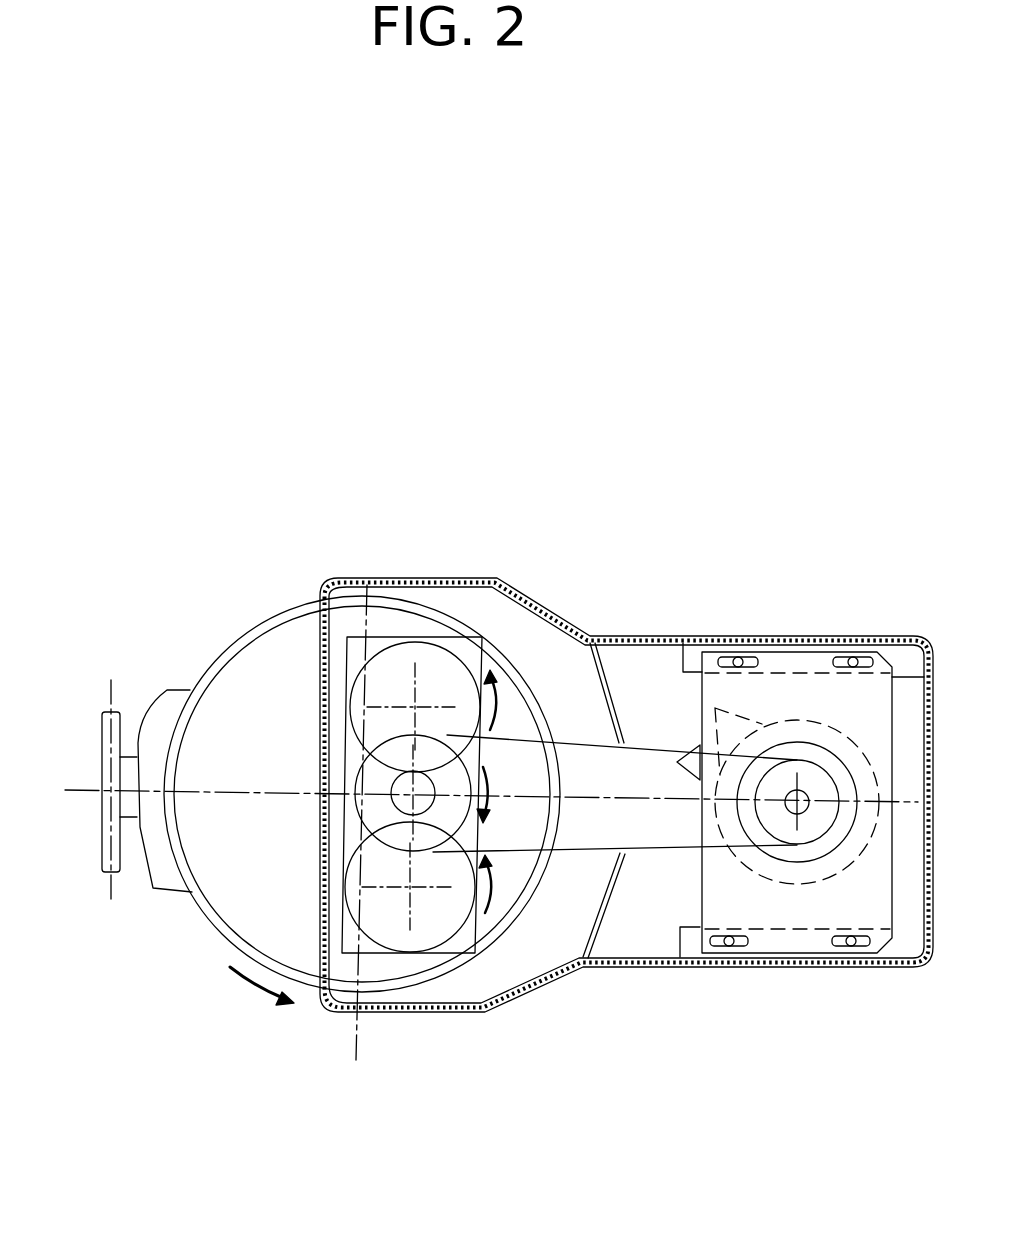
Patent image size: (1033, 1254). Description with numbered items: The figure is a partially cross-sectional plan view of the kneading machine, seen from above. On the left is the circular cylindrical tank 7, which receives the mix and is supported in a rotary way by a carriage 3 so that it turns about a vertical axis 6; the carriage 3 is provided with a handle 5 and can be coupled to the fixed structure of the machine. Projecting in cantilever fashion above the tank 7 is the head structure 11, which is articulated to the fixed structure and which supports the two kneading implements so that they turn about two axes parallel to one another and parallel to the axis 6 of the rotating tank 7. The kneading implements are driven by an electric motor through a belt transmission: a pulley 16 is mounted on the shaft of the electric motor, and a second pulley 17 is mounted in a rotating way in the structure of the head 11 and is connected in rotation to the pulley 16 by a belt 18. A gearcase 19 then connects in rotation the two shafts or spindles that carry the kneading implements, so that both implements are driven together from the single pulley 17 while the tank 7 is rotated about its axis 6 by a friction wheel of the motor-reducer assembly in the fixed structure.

The carriage 3 is at (173, 688).
The handle 5 is at (126, 718).
The vertical axis 6 is at (395, 790).
The cylindrical tank 7 is at (230, 938).
The head structure 11 is at (553, 609).
The pulley 16 is at (815, 788).
The pulley 17 is at (457, 813).
The belt 18 is at (653, 748).
The gearcase 19 is at (475, 655).